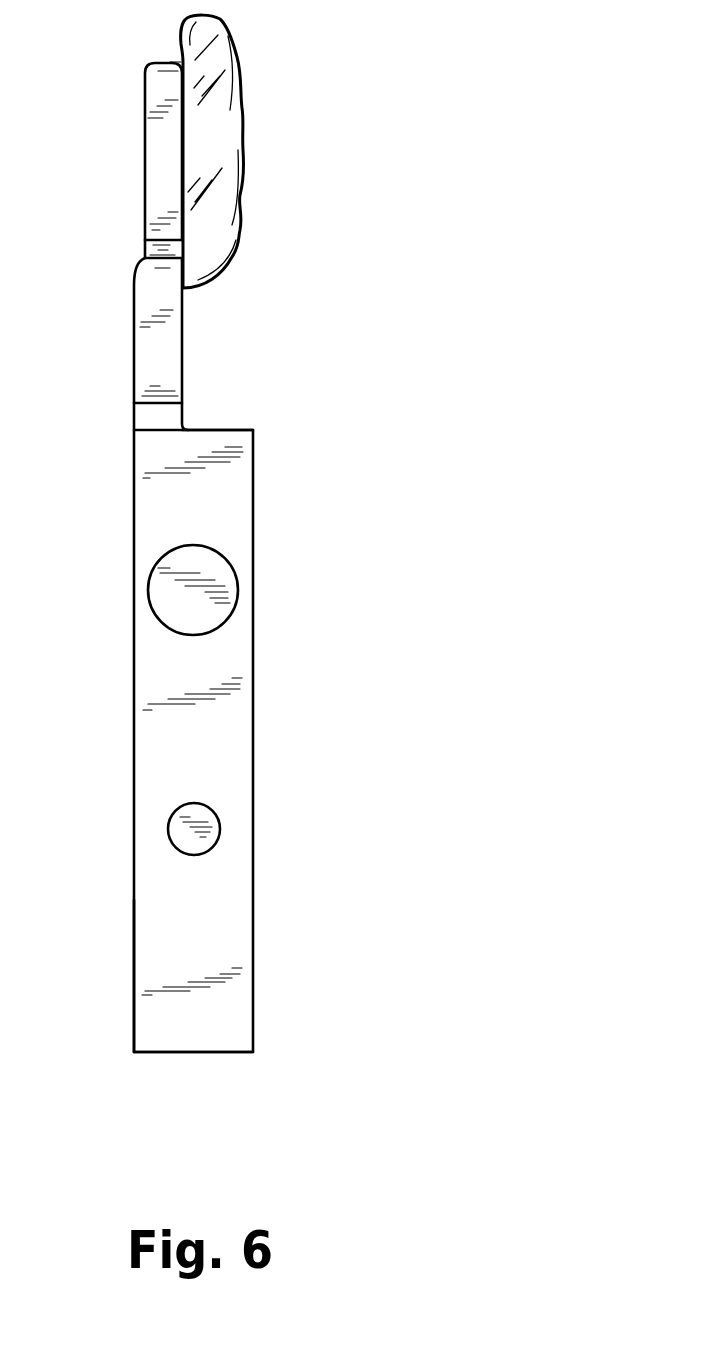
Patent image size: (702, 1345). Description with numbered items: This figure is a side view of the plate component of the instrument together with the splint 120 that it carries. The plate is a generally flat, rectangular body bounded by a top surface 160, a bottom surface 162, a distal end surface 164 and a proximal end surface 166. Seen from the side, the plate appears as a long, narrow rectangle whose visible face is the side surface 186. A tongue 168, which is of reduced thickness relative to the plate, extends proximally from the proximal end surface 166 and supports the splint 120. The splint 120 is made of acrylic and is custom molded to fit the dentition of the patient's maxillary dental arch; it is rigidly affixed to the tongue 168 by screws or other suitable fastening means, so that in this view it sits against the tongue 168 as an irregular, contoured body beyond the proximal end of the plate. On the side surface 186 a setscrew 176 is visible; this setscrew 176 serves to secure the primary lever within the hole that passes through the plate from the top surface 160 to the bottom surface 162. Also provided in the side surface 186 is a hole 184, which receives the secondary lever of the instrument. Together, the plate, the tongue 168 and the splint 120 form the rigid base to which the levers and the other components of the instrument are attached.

The splint 120 is at (239, 240).
The top surface 160 is at (253, 739).
The bottom surface 162 is at (133, 987).
The distal end surface 164 is at (224, 1052).
The proximal end surface 166 is at (238, 430).
The tongue 168 is at (182, 339).
The setscrew 176 is at (230, 608).
The hole 184 is at (220, 833).
The side surface 186 is at (222, 937).